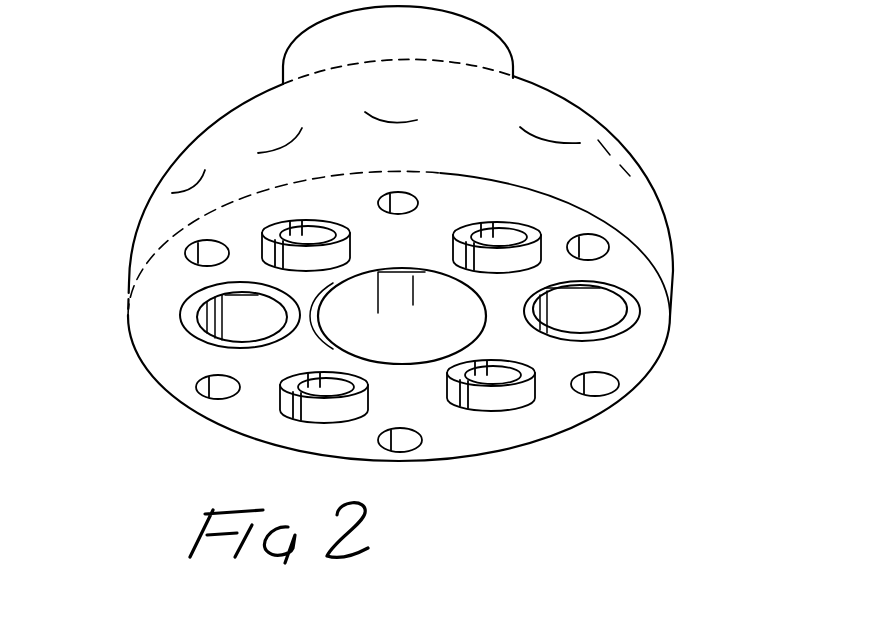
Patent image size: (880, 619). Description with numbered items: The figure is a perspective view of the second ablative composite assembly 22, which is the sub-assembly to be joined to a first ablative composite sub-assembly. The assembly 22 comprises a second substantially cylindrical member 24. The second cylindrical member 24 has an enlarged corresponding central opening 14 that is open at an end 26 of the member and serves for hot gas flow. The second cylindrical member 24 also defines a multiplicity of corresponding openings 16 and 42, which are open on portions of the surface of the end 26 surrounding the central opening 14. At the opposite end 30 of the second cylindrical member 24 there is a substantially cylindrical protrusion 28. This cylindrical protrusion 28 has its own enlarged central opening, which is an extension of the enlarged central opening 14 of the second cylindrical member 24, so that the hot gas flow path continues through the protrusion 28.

The enlarged corresponding central opening 14 is at (300, 312).
The corresponding openings 16 is at (598, 397).
The second ablative composite assembly 22 is at (687, 258).
The second substantially cylindrical member 24 is at (603, 185).
The end 26 is at (647, 297).
The substantially cylindrical protrusion 28 is at (510, 62).
The opposite end 30 is at (510, 78).
The corresponding openings 42 is at (603, 310).